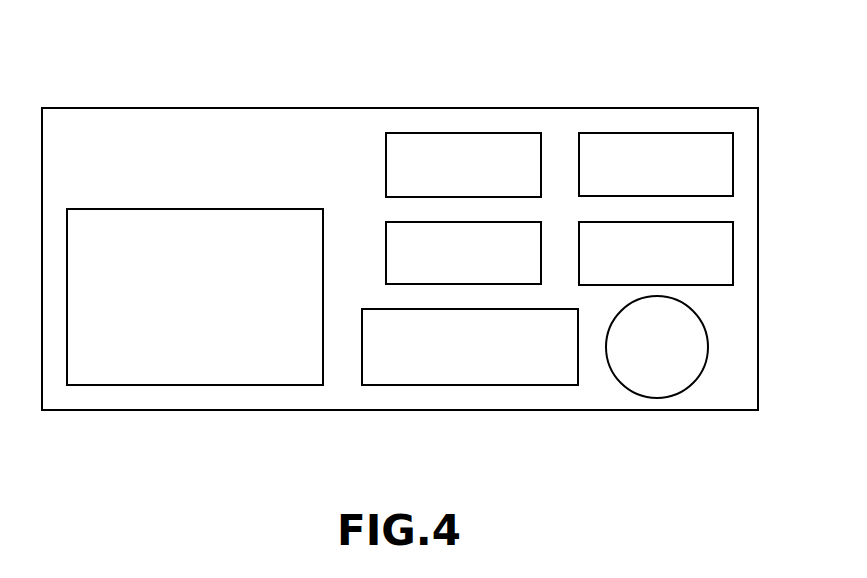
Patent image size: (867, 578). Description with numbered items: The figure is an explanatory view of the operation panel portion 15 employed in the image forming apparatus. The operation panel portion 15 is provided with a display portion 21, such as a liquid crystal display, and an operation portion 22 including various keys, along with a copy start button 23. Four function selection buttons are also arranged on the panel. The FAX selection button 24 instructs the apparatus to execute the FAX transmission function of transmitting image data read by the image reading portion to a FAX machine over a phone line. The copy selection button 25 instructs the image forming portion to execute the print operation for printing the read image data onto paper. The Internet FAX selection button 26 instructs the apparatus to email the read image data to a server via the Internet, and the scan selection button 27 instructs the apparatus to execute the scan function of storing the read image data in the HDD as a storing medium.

The operation panel portion 15 is at (217, 106).
The display portion 21 is at (208, 370).
The operation portion 22 is at (491, 372).
The copy start button 23 is at (660, 370).
The FAX selection button 24 is at (385, 168).
The copy selection button 25 is at (386, 252).
The Internet FAX selection button 26 is at (733, 163).
The scan selection button 27 is at (733, 253).